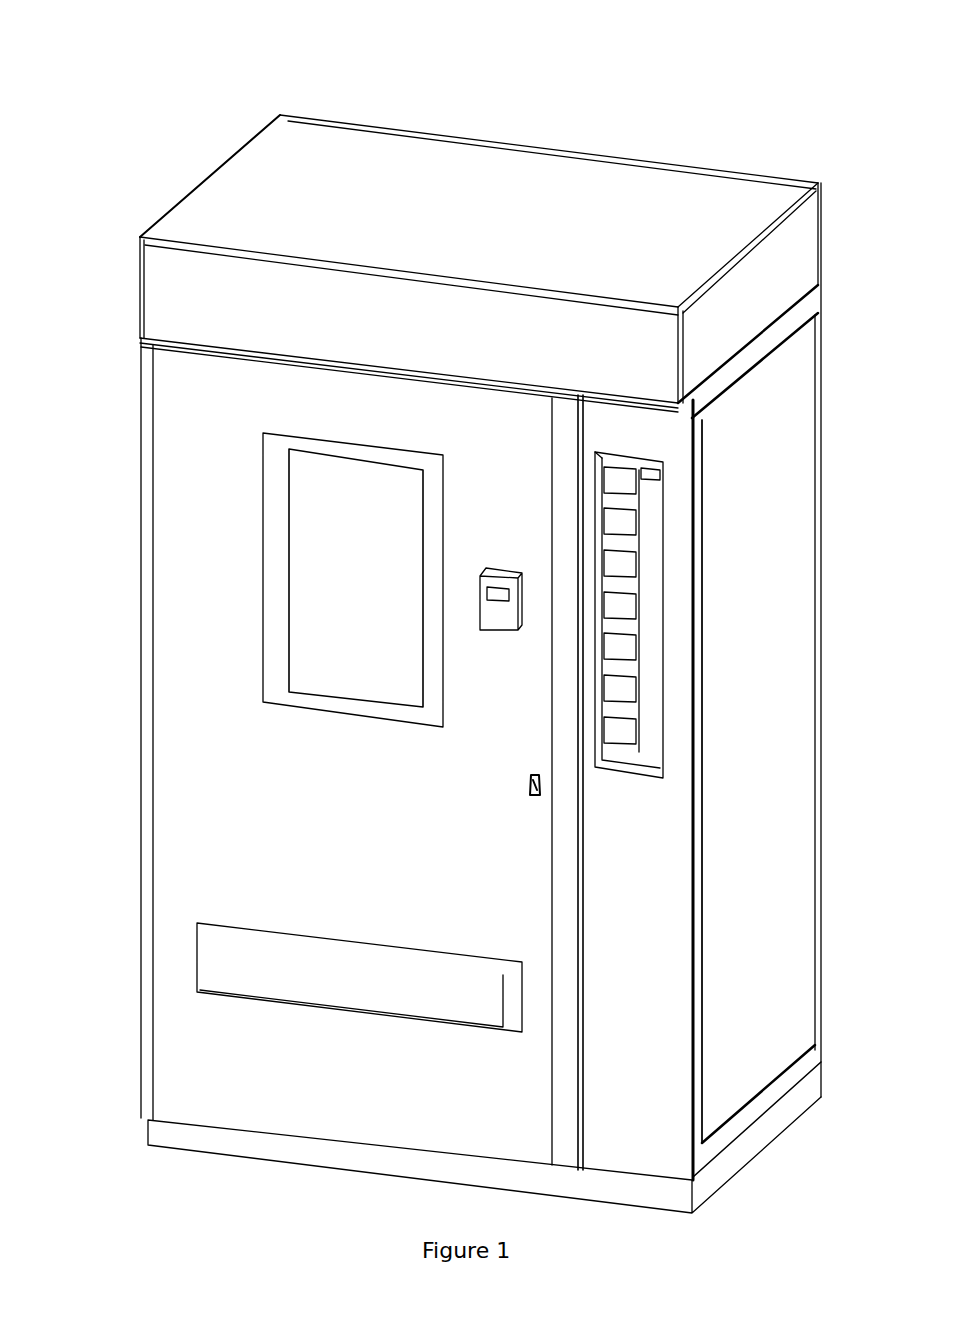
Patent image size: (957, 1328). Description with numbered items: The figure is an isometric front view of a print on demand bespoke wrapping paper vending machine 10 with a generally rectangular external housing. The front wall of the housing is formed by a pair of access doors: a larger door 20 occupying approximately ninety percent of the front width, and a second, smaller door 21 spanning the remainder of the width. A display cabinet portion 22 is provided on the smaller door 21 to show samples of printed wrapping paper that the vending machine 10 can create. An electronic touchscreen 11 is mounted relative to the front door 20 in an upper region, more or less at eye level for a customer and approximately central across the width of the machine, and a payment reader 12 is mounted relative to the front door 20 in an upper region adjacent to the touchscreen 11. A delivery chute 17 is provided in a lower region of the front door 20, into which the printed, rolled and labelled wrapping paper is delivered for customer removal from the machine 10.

The wrapping paper vending machine 10 is at (185, 108).
The electronic touchscreen 11 is at (324, 538).
The payment reader 12 is at (478, 596).
The delivery chute 17 is at (233, 962).
The larger door 20 is at (324, 727).
The smaller door 21 is at (630, 890).
The display cabinet portion 22 is at (628, 585).